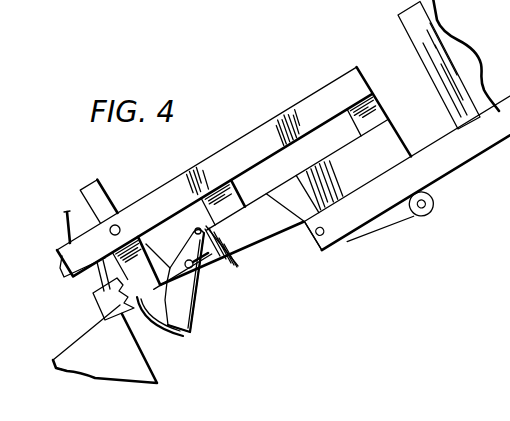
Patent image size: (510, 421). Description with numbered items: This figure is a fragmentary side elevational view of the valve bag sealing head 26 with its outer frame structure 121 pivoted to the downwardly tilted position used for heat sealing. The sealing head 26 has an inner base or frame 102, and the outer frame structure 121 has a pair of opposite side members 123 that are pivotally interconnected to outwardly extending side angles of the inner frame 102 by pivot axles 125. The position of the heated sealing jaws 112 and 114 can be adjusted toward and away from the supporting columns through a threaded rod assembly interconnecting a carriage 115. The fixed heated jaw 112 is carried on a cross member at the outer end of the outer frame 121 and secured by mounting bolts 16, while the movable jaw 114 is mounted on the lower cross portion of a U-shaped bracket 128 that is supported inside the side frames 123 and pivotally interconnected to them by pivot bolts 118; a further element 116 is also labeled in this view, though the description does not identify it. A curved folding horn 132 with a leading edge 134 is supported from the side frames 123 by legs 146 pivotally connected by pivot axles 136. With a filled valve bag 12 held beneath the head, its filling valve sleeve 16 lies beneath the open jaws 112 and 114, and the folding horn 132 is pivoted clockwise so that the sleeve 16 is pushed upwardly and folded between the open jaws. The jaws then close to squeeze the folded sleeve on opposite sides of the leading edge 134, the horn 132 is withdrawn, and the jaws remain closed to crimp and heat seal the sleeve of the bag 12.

The valve bag 12 is at (125, 364).
The filling valve sleeve 16 is at (118, 287).
The valve bag sealing head 26 is at (346, 309).
The inner base or frame 102 is at (458, 173).
The heated sealing jaw 112 is at (82, 375).
The movable jaw 114 is at (123, 283).
The carriage 115 is at (451, 51).
The bracket 116 is at (97, 272).
The pivot bolt 118 is at (120, 229).
The outer frame structure 121 is at (68, 216).
The side frame member 123 is at (232, 160).
The pivot axle 125 is at (302, 236).
The U-shaped bracket 128 is at (100, 197).
The curved folding horn 132 is at (185, 336).
The leading edge 134 is at (191, 317).
The pivot axle 136 is at (210, 242).
The support leg 146 is at (184, 297).